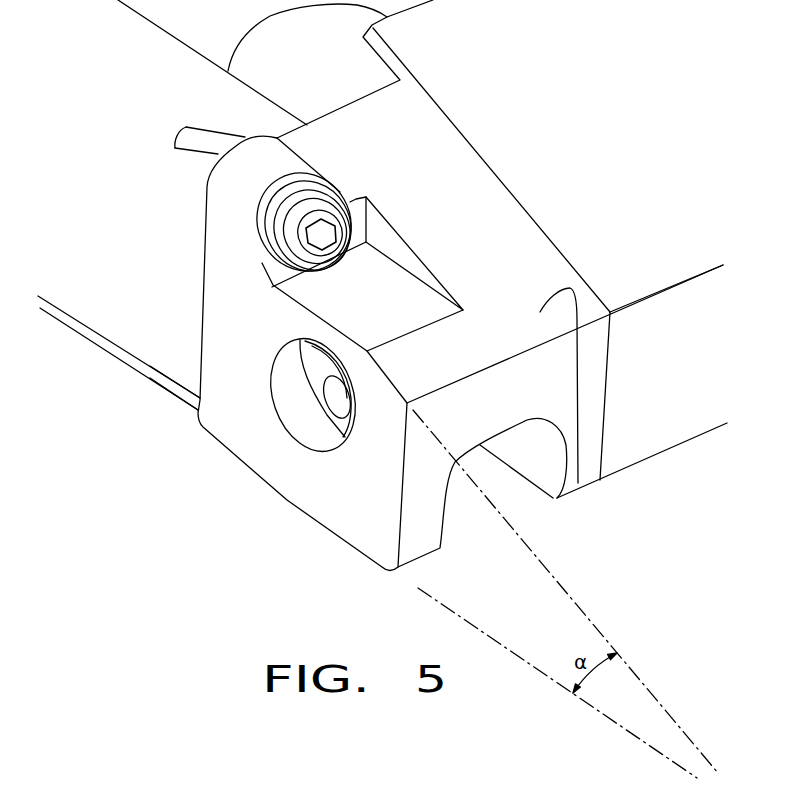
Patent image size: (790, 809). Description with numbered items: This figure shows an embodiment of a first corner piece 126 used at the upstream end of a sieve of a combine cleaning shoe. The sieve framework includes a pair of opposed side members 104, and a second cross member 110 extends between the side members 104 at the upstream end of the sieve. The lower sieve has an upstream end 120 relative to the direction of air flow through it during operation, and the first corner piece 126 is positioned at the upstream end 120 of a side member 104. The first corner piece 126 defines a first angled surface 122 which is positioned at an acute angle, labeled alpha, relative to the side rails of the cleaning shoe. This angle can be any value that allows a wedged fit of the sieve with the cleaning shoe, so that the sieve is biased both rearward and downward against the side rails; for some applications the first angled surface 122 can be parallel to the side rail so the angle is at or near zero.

The side member 104 is at (118, 322).
The second cross member 110 is at (680, 447).
The upstream end 120 is at (167, 392).
The first angled surface 122 is at (578, 483).
The first corner piece 126 is at (287, 502).